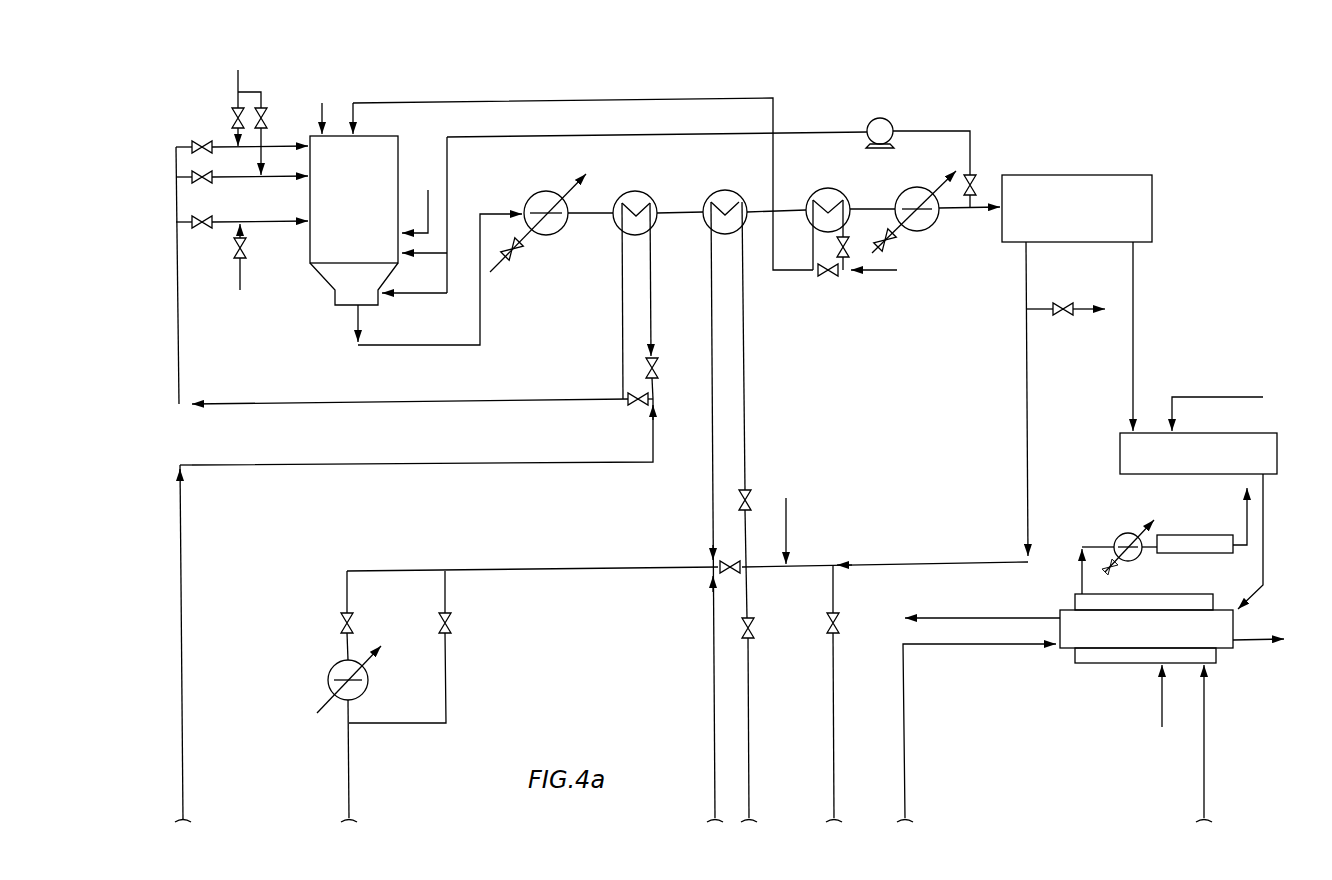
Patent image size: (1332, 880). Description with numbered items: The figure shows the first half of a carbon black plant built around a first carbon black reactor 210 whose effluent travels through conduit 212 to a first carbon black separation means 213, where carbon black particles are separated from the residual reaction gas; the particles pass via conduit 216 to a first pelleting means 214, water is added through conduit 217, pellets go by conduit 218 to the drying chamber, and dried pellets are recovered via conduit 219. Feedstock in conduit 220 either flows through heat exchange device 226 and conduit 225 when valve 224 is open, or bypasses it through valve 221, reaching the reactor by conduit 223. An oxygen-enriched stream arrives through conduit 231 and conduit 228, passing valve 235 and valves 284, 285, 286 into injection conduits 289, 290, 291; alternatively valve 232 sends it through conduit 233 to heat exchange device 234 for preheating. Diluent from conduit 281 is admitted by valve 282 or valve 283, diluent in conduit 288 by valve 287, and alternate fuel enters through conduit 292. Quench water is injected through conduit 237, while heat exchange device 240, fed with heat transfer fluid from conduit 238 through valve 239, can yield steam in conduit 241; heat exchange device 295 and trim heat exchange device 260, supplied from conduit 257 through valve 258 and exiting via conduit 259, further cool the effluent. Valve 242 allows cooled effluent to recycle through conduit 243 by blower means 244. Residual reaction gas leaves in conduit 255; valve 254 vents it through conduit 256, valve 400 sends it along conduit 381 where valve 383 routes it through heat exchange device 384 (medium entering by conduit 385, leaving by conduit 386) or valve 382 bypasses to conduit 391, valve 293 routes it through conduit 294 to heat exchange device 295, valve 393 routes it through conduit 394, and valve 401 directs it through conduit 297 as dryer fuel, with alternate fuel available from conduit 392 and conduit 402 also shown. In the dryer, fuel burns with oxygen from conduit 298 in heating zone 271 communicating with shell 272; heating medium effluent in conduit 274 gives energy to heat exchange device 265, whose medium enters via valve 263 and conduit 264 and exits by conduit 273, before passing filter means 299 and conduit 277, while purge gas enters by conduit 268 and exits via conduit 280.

The first carbon black reactor 210 is at (326, 288).
The conduit 212 is at (426, 343).
The first carbon black separation means 213 is at (1120, 166).
The first pelleting means 214 is at (1270, 426).
The conduit 216 is at (1134, 294).
The conduit 217 is at (1226, 397).
The conduit 218 is at (1260, 592).
The conduit 219 is at (974, 616).
The conduit 220 is at (884, 278).
The valve 221 is at (835, 278).
The conduit 223 is at (468, 100).
The valve 224 is at (852, 242).
The conduit 225 is at (806, 268).
The heat exchange device 226 is at (828, 190).
The conduit 228 is at (432, 400).
The conduit 231 is at (184, 744).
The valve 232 is at (660, 366).
The conduit 233 is at (654, 272).
The heat exchange device 234 is at (642, 190).
The valve 235 is at (626, 404).
The conduit 237 is at (428, 190).
The conduit 238 is at (498, 275).
The valve 239 is at (526, 252).
The heat exchange device 240 is at (531, 195).
The conduit 241 is at (580, 178).
The valve 242 is at (978, 172).
The conduit 243 is at (952, 130).
The pump or blower means 244 is at (888, 120).
The valve 254 is at (1060, 300).
The conduit 255 is at (1022, 400).
The conduit 256 is at (1082, 312).
The conduit 257 is at (874, 254).
The valve 258 is at (896, 246).
The conduit 259 is at (939, 188).
The heat exchange device 260 is at (938, 226).
The valve 263 is at (1120, 567).
The conduit 264 is at (1110, 576).
The heat exchange device 265 is at (1124, 534).
The conduit 268 is at (965, 652).
The heating zone 271 is at (1076, 664).
The shell 272 is at (1062, 650).
The conduit 273 is at (1150, 517).
The conduit 274 is at (1076, 574).
The conduit 277 is at (1242, 516).
The conduit 280 is at (1258, 644).
The conduit 281 is at (242, 77).
The valve 282 is at (232, 110).
The valve 283 is at (268, 114).
The valve 284 is at (196, 140).
The valve 285 is at (218, 172).
The valve 286 is at (202, 232).
The valve 287 is at (248, 252).
The conduit 288 is at (244, 287).
The conduit 289 is at (262, 222).
The conduit 290 is at (232, 178).
The conduit 291 is at (268, 152).
The conduit 292 is at (322, 103).
The valve 293 is at (755, 498).
The conduit 294 is at (743, 296).
The heat exchange device 295 is at (734, 190).
The conduit 297 is at (1200, 754).
The conduit 298 is at (1160, 716).
The filter means 299 is at (1194, 556).
The conduit 381 is at (526, 574).
The valve 382 is at (456, 624).
The valve 383 is at (336, 626).
The heat exchange device 384 is at (319, 676).
The conduit 385 is at (318, 713).
The conduit 386 is at (384, 662).
The conduit 391 is at (350, 778).
The conduit 392 is at (792, 512).
The valve 393 is at (754, 630).
The conduit 394 is at (716, 762).
The valve 400 is at (722, 556).
The valve 401 is at (840, 614).
The outlet line 402 is at (834, 770).